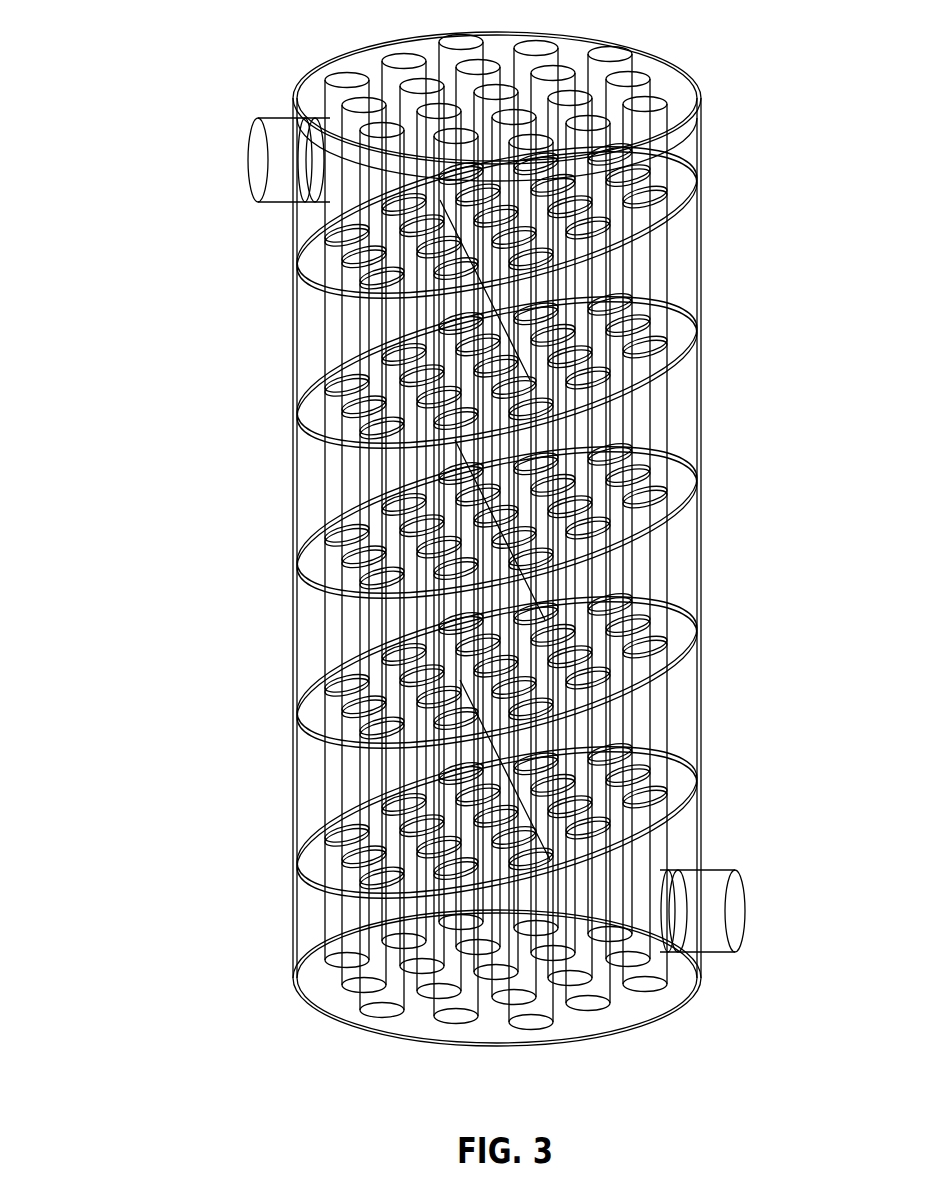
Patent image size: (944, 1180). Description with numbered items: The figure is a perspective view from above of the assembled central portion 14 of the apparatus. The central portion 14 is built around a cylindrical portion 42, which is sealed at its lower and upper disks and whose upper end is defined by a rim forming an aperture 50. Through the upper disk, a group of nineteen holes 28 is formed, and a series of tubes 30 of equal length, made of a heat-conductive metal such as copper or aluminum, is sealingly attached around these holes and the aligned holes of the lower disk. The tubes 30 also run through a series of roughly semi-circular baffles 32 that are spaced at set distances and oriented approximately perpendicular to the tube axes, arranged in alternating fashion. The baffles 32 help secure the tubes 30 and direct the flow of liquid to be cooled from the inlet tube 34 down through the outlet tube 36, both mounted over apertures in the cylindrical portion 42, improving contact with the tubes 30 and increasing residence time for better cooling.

The central portion 14 is at (237, 617).
The holes 28 is at (310, 70).
The tubes 30 is at (657, 268).
The baffles 32 is at (705, 487).
The inlet tube 34 is at (262, 160).
The outlet tube 36 is at (745, 898).
The cylindrical portion 42 is at (298, 372).
The aperture 50 is at (665, 80).